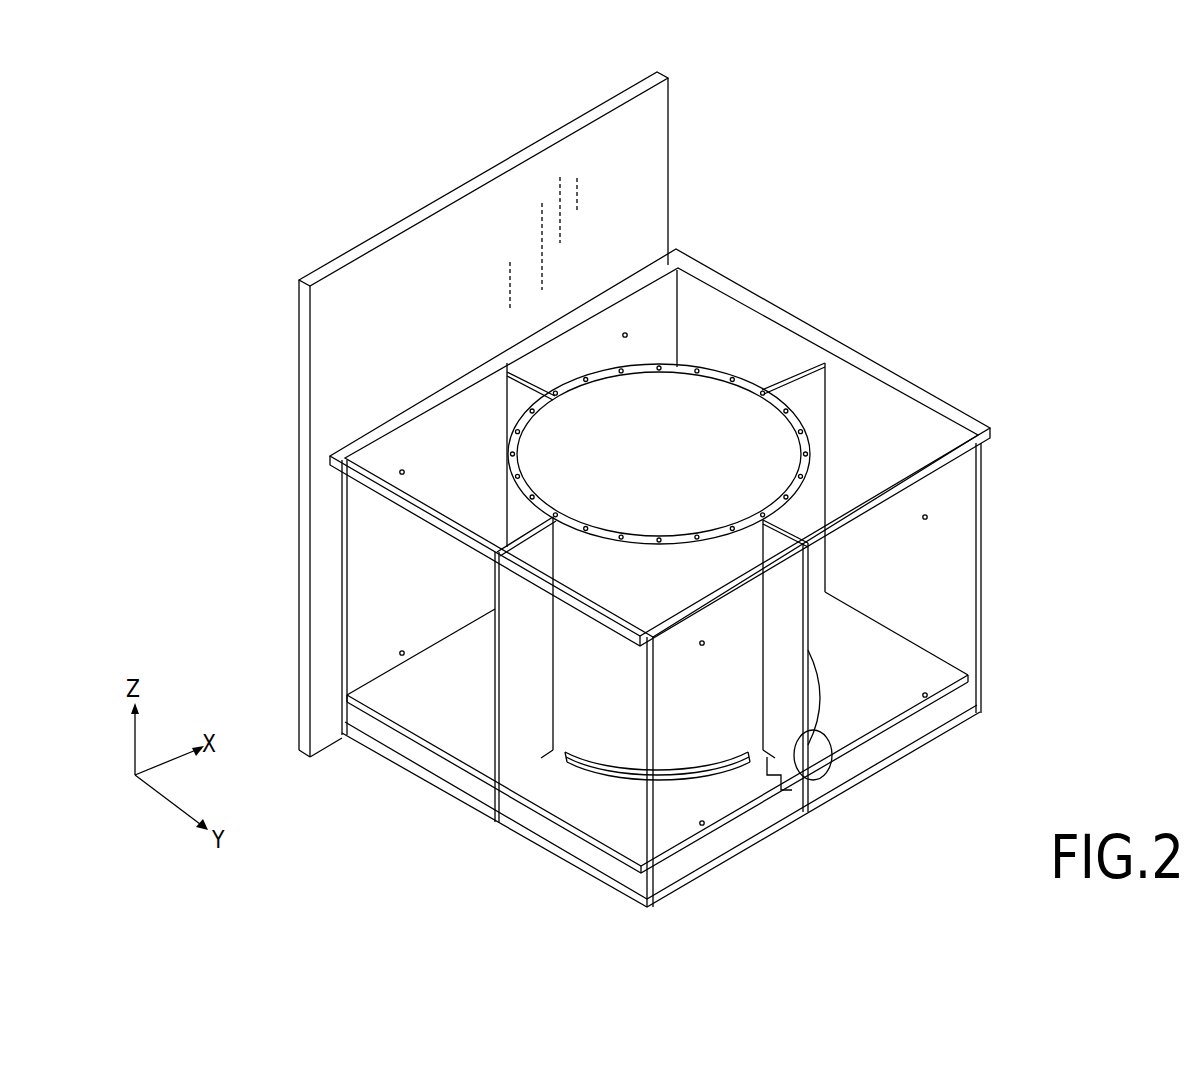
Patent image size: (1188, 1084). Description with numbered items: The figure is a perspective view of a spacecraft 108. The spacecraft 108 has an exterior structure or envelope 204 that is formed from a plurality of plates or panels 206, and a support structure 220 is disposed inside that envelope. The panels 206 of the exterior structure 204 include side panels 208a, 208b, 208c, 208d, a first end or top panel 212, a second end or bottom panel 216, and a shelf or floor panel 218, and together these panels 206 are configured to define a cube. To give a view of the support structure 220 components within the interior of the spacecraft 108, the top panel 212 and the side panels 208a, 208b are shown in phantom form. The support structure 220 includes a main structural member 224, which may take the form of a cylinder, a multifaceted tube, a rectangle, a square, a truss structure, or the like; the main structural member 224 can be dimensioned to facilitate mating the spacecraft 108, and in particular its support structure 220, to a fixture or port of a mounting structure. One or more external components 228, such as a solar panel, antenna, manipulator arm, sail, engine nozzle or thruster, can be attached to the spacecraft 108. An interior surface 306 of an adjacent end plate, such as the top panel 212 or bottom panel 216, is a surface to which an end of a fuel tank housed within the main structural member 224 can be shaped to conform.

The spacecraft 108 is at (760, 113).
The external component 228 is at (578, 122).
The top panel 212 is at (700, 312).
The panels 206 is at (996, 580).
The exterior structure 204 is at (683, 877).
The bottom panel 216 is at (632, 905).
The floor panel 218 is at (565, 808).
The side panel 208a is at (355, 625).
The side panel 208b is at (958, 537).
The side panel 208c is at (958, 468).
The side panel 208d is at (655, 303).
The main structural member 224 is at (762, 376).
The support structure 220 is at (815, 415).
The interior surface 306 is at (960, 470).